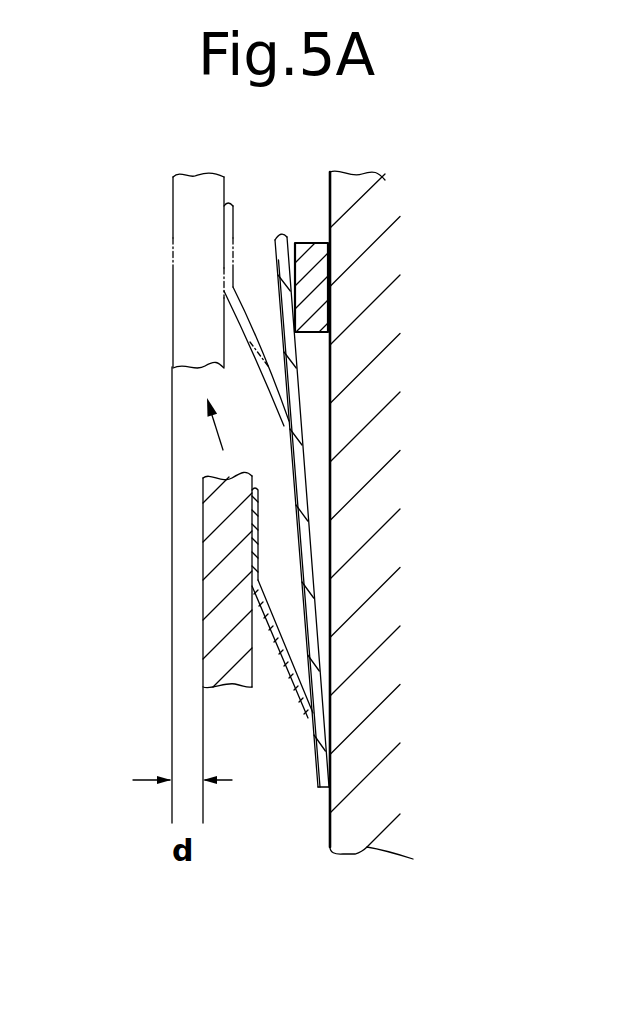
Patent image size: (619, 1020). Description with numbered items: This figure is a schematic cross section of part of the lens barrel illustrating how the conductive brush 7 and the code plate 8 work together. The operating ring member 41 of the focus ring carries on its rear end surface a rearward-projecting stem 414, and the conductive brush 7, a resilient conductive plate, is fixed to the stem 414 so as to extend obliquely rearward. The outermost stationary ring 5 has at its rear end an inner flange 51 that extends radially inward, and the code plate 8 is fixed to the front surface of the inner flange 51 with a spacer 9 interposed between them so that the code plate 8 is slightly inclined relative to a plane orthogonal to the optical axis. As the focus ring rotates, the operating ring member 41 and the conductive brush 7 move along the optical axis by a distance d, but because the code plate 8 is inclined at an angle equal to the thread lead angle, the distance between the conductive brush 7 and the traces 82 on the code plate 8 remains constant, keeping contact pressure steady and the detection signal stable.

The operating ring member 41 is at (173, 223).
The stem 414 is at (160, 394).
The conductive brush 7 is at (256, 347).
The code plate 8 is at (300, 460).
The traces 82 is at (298, 541).
The spacer 9 is at (316, 308).
The outermost stationary ring 5 is at (377, 675).
The inner flange 51 is at (441, 509).